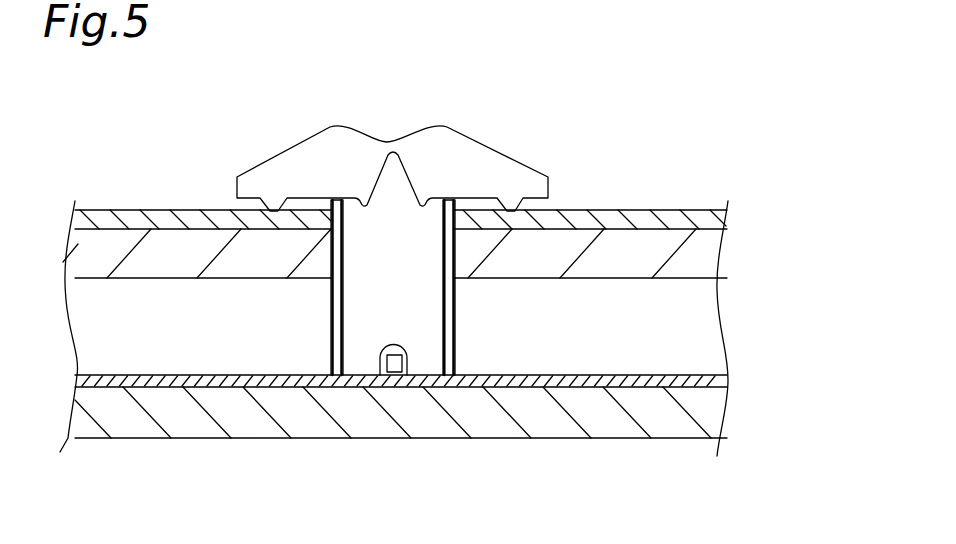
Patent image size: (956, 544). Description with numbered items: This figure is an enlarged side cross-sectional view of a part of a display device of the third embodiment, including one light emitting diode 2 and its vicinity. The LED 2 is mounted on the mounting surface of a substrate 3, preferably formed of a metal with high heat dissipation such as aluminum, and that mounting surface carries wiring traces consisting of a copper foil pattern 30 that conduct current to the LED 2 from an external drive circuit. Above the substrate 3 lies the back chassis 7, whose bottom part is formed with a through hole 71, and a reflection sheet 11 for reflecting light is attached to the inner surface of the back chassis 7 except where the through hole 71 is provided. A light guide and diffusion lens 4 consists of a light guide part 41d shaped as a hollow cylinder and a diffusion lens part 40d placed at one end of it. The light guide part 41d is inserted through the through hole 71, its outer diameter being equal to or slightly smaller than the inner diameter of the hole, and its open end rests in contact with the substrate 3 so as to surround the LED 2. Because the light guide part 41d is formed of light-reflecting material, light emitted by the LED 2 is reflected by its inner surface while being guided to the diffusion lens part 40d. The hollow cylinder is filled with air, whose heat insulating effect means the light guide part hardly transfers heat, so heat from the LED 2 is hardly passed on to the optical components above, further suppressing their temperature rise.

The light guide and diffusion lens 4 is at (417, 261).
The diffusion lens part 40d is at (503, 153).
The light guide part 41d is at (337, 342).
The through hole 71 is at (347, 286).
The reflection sheet 11 is at (606, 218).
The back chassis 7 is at (703, 264).
The copper foil pattern 30 is at (723, 385).
The substrate 3 is at (498, 433).
The light emitting diode 2 is at (382, 360).